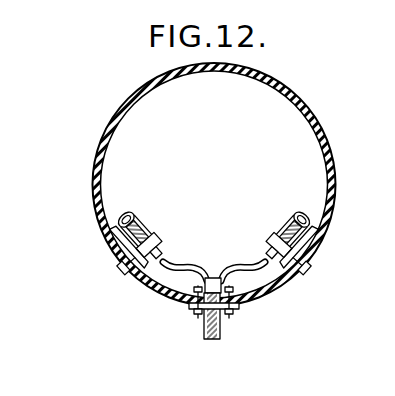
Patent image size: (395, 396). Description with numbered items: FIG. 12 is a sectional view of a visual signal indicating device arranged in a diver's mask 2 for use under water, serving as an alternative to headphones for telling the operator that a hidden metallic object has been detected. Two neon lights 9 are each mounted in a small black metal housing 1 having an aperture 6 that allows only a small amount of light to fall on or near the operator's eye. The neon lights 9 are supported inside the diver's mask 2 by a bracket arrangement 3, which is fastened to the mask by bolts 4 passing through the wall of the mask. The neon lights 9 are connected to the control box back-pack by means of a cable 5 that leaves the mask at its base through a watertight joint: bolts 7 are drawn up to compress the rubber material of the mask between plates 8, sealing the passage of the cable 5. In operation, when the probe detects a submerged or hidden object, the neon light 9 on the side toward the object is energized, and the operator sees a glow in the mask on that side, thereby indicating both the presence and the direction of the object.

The metal housing 1 is at (128, 216).
The diver's mask 2 is at (312, 108).
The bracket arrangement 3 is at (169, 259).
The bolt 4 is at (122, 278).
The cable 5 is at (218, 338).
The aperture 6 is at (142, 226).
The bolt 7 is at (200, 310).
The plate 8 is at (240, 305).
The neon light 9 is at (146, 211).